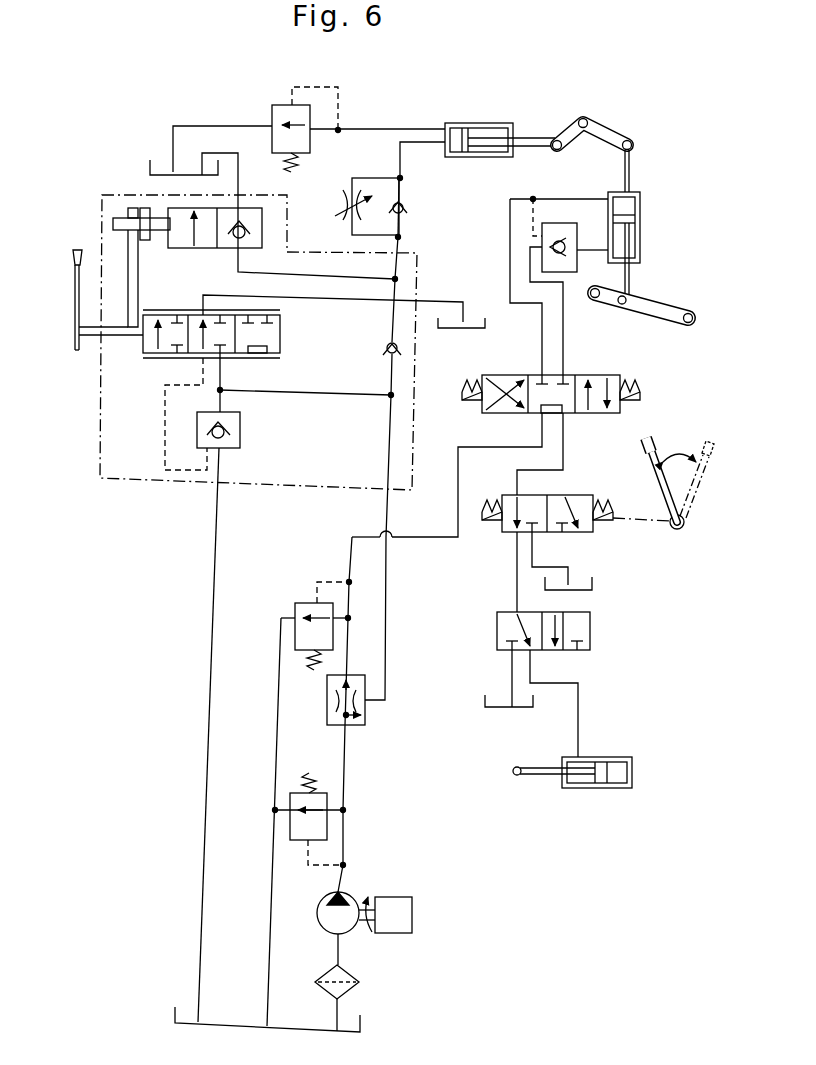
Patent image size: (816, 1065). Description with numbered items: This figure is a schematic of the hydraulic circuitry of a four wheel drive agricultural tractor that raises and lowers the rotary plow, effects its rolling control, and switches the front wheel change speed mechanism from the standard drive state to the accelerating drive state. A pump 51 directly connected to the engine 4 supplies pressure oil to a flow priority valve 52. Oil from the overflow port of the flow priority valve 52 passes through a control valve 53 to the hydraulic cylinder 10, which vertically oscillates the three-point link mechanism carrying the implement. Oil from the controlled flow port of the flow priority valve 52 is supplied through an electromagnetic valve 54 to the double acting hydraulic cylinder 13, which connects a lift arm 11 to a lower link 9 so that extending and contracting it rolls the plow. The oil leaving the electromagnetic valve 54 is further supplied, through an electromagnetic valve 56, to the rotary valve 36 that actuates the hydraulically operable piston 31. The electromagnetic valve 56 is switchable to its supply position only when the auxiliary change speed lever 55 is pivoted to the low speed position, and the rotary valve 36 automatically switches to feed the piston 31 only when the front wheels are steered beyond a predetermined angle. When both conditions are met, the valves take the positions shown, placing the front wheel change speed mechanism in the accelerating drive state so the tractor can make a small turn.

The engine 4 is at (412, 912).
The lower link 9 is at (665, 298).
The hydraulic cylinder 10 is at (478, 123).
The lift arm 11 is at (612, 124).
The double acting hydraulic cylinder 13 is at (645, 192).
The hydraulically operable piston 31 is at (603, 784).
The rotary valve 36 is at (592, 653).
The pump 51 is at (350, 893).
The flow priority valve 52 is at (363, 727).
The control valve 53 is at (97, 477).
The electromagnetic valve 54 is at (622, 375).
The auxiliary change speed lever 55 is at (655, 440).
The electromagnetic valve 56 is at (592, 533).